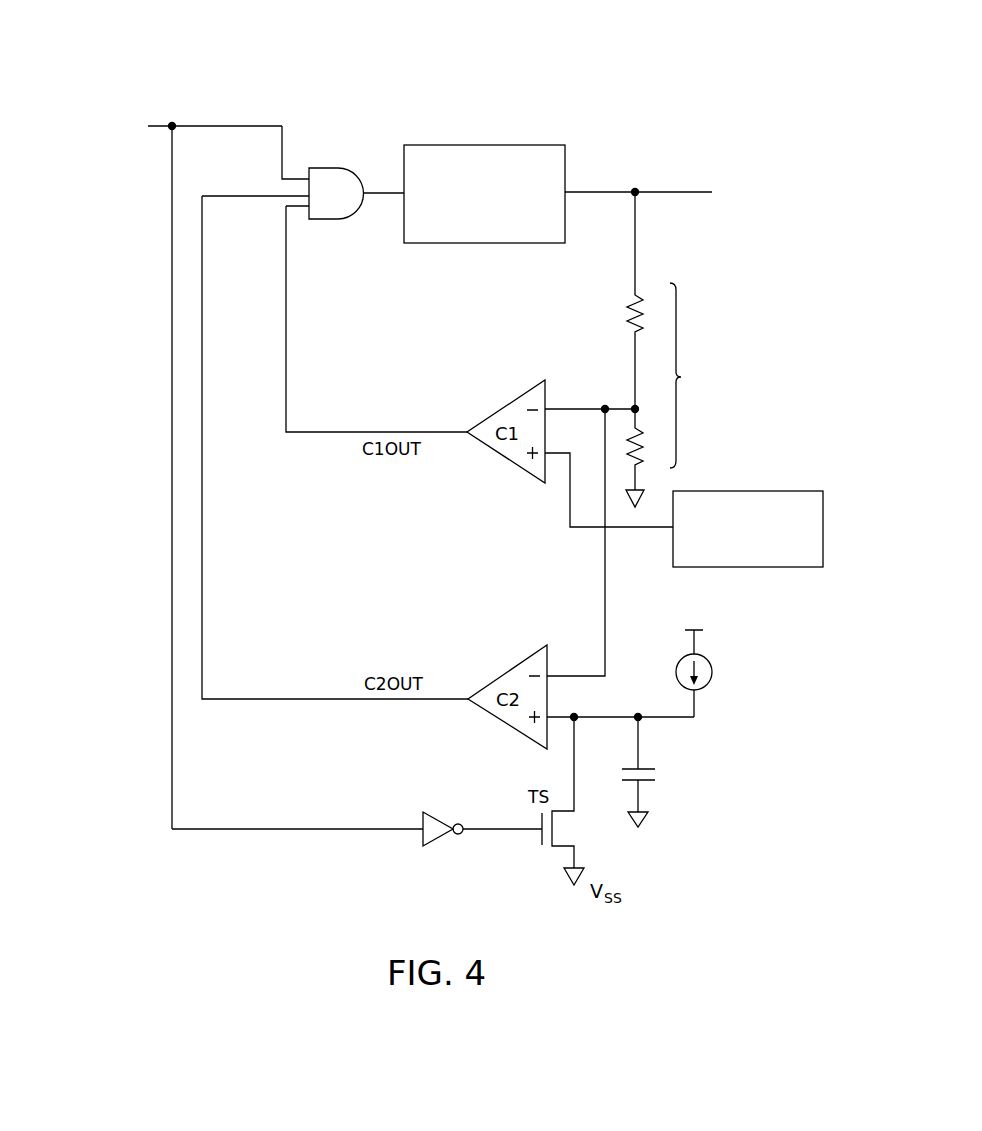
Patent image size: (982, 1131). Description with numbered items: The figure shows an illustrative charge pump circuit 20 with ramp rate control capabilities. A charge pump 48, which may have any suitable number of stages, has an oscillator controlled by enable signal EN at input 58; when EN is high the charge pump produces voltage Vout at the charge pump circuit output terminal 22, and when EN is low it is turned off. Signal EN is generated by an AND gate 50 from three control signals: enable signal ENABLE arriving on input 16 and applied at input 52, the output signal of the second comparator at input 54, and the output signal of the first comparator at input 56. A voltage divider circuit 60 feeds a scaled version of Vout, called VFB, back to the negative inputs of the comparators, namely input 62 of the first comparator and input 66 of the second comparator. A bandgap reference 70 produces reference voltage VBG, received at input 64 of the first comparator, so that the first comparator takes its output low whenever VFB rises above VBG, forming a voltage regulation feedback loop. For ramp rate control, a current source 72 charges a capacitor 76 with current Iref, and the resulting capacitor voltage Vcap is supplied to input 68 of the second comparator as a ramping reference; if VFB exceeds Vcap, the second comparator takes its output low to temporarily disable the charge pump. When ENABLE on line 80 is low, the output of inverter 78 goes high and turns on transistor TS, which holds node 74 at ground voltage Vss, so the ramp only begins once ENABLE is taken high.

The charge pump circuit 20 is at (572, 50).
The input 16 is at (148, 130).
The charge pump circuit output terminal 22 is at (668, 192).
The charge pump 48 is at (488, 145).
The AND gate 50 is at (325, 168).
The input 52 is at (290, 178).
The input 54 is at (263, 198).
The input 56 is at (298, 210).
The input 58 is at (380, 193).
The voltage divider circuit 60 is at (667, 349).
The input 62 is at (558, 412).
The input 64 is at (570, 495).
The input 66 is at (598, 680).
The input 68 is at (558, 717).
The bandgap reference 70 is at (762, 567).
The current source 72 is at (712, 672).
The node 74 is at (648, 722).
The capacitor 76 is at (668, 779).
The inverter 78 is at (432, 846).
The inverter input line 80 is at (294, 830).